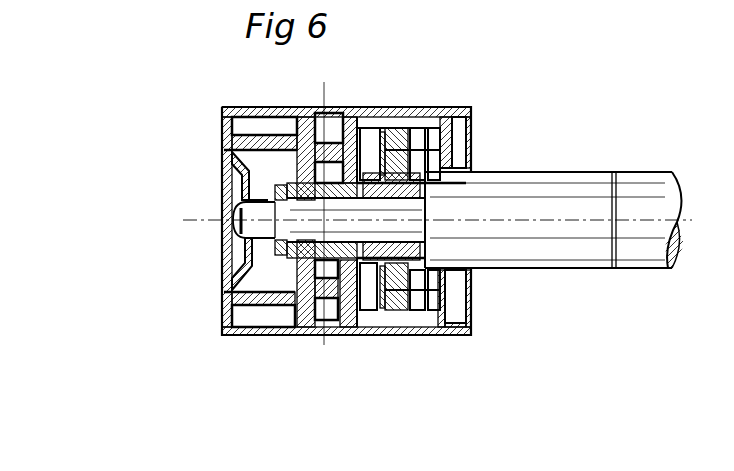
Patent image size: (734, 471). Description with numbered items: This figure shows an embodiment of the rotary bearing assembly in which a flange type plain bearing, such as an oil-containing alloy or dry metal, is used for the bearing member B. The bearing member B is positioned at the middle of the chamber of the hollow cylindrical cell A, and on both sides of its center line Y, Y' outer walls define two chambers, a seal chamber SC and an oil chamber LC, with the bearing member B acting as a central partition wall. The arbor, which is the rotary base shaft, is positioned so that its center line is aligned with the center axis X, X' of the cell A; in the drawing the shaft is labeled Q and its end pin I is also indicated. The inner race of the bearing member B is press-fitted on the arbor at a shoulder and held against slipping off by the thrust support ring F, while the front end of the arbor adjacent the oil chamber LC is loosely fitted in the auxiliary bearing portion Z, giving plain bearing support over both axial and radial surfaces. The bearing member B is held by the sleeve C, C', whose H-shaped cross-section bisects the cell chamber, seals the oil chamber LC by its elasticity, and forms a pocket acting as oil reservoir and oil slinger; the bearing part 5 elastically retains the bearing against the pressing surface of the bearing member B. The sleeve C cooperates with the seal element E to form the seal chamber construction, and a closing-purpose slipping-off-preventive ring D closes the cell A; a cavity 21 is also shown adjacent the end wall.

The cell A is at (222, 120).
The bearing member B is at (232, 162).
The auxiliary bearing portion Z is at (238, 208).
The center axis X is at (311, 220).
The center axis X' is at (576, 220).
The pin I is at (240, 236).
The thrust support ring F is at (282, 248).
The oil chamber LC is at (252, 289).
The bearing part 5 is at (303, 277).
The center line Y is at (323, 140).
The center line Y' is at (320, 294).
The sleeve C is at (317, 134).
The sleeve C' is at (322, 305).
The seal chamber SC is at (371, 148).
The cavity 21 is at (460, 128).
The seal element E is at (440, 167).
The closing-purpose slipping-off-preventive ring D is at (458, 298).
The shaft Q is at (552, 170).